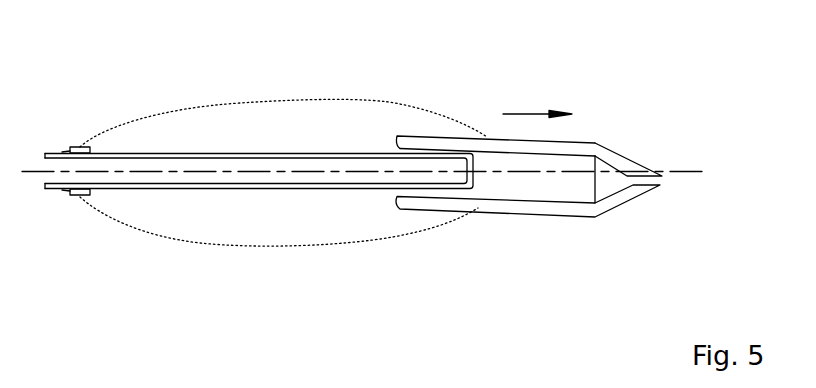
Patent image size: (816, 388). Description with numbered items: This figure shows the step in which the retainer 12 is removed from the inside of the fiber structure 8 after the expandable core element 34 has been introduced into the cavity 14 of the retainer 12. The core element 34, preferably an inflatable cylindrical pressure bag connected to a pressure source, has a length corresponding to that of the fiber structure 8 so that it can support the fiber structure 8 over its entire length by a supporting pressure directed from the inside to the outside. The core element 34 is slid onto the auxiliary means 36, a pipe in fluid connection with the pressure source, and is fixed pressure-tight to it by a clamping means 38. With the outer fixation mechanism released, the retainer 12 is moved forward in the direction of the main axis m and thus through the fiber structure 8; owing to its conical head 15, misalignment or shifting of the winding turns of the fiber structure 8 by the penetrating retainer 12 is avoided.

The fiber structure 8 is at (423, 108).
The retainer 12 is at (587, 132).
The cavity 14 is at (545, 190).
The conical head 15 is at (625, 165).
The core element 34 is at (211, 155).
The auxiliary means 36 is at (53, 154).
The clamping means 38 is at (75, 197).
The main axis m is at (687, 172).